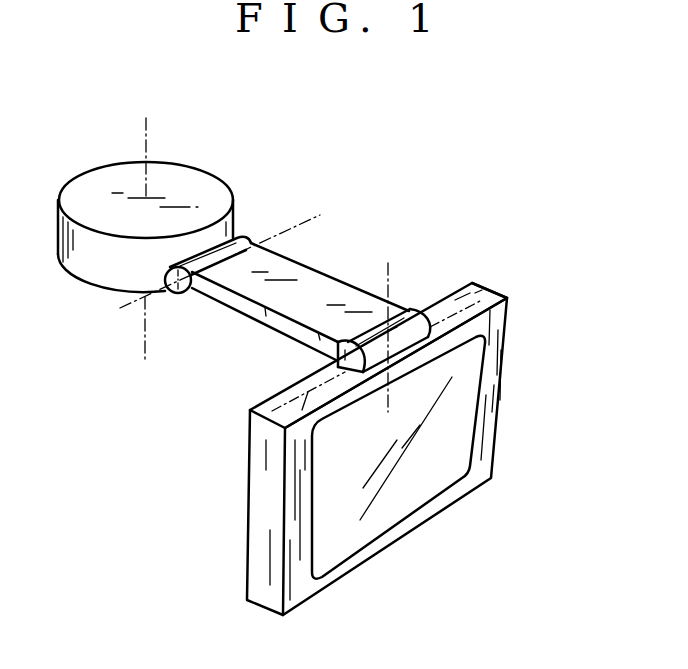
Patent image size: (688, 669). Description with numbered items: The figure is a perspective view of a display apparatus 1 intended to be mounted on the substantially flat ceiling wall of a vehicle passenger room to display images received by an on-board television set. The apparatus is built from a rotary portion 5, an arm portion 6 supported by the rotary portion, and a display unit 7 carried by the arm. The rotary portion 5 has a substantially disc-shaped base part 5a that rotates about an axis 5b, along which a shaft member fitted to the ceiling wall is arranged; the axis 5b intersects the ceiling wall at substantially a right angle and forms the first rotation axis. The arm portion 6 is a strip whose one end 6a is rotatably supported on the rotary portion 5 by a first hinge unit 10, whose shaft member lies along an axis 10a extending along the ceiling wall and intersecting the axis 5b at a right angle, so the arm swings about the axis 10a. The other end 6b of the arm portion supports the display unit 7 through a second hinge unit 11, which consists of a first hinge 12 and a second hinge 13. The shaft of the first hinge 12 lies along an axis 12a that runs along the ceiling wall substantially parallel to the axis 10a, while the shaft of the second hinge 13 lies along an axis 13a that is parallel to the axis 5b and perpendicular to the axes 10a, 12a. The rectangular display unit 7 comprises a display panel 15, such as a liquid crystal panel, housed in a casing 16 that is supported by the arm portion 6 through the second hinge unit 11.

The display apparatus 1 is at (300, 266).
The rotary portion 5 is at (207, 170).
The base part 5a is at (220, 197).
The axis 5b is at (148, 127).
The arm portion 6 is at (348, 282).
The one end of the arm portion 6a is at (236, 306).
The other end of the arm portion 6b is at (430, 295).
The display unit 7 is at (517, 352).
The first hinge unit 10 is at (173, 303).
The axis 10a is at (305, 210).
The second hinge unit 11 is at (327, 367).
The first hinge 12 is at (440, 322).
The axis 12a is at (302, 410).
The second hinge 13 is at (495, 306).
The axis 13a is at (390, 305).
The display panel 15 is at (427, 488).
The casing 16 is at (297, 592).